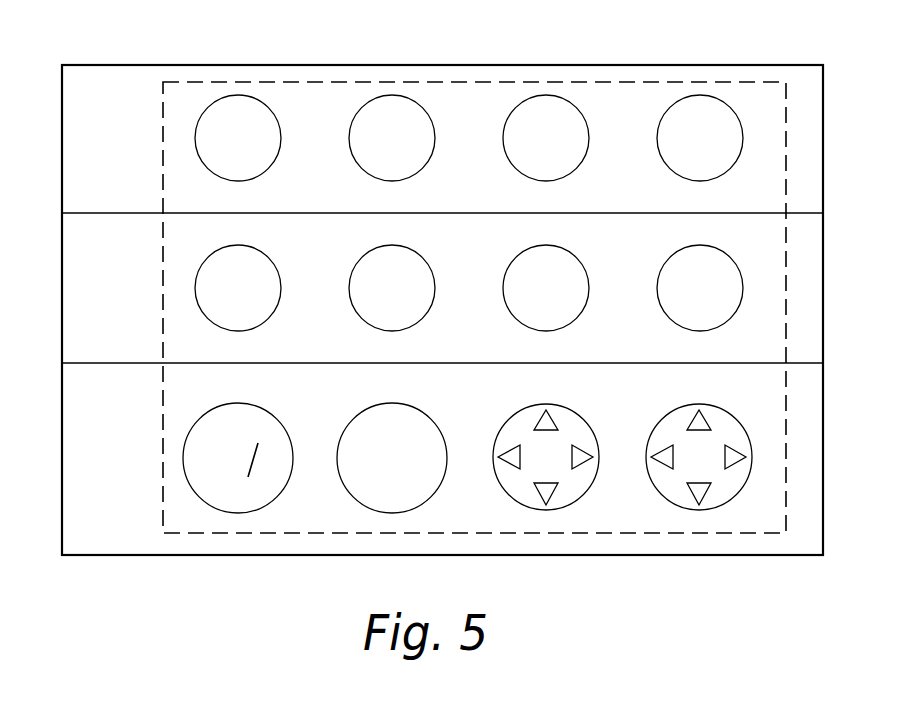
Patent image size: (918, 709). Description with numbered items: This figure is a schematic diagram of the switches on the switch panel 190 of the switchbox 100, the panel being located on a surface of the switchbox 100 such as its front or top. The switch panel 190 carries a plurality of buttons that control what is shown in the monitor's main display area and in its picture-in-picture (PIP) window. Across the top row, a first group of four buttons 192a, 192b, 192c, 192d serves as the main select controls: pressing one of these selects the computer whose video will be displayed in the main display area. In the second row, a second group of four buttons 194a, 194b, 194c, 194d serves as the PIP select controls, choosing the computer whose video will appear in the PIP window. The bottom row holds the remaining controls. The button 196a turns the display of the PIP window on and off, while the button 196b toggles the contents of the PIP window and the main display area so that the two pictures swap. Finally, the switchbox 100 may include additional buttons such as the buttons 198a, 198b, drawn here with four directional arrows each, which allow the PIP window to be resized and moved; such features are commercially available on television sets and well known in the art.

The switchbox 100 is at (795, 70).
The switch panel 190 is at (786, 147).
The main select button 192a is at (238, 95).
The main select button 192b is at (392, 95).
The main select button 192c is at (546, 95).
The main select button 192d is at (700, 95).
The PIP select button 194a is at (264, 322).
The PIP select button 194b is at (420, 257).
The PIP select button 194c is at (517, 320).
The PIP select button 194d is at (671, 258).
The PIP on/off button 196a is at (240, 404).
The PIP toggle button 196b is at (408, 407).
The PIP size button 198a is at (513, 498).
The PIP position button 198b is at (666, 498).